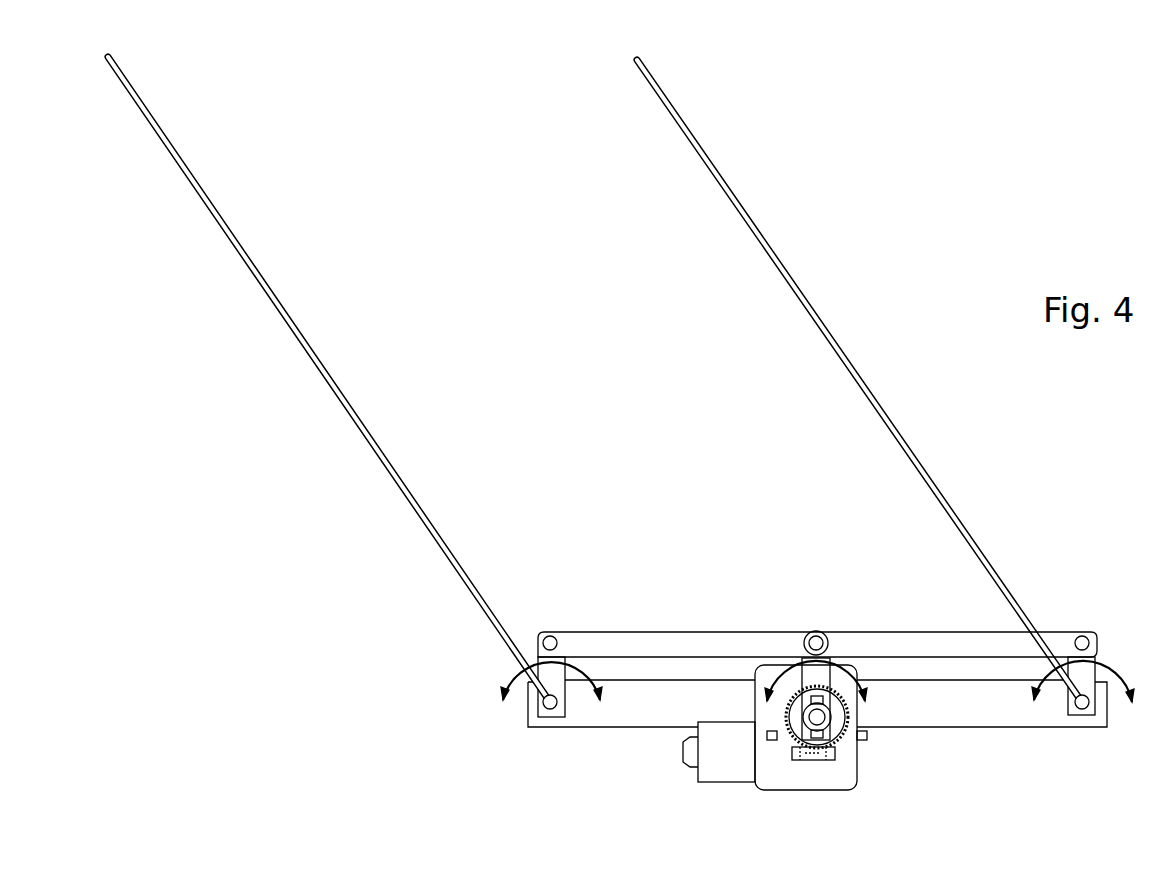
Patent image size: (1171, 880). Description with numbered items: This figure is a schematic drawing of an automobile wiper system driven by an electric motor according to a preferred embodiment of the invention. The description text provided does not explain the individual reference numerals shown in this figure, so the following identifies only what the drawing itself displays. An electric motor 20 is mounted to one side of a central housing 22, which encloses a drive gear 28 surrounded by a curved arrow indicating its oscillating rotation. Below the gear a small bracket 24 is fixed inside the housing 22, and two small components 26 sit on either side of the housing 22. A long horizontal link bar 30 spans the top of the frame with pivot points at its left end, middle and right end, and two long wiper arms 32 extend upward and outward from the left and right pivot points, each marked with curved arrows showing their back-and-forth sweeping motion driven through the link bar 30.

The motor 20 is at (683, 752).
The gear housing 22 is at (755, 714).
The mounting bracket 24 is at (812, 760).
The limit switches 26 is at (770, 737).
The drive gear 28 is at (848, 740).
The link bar 30 is at (869, 632).
The pivot arms 32 is at (278, 297).